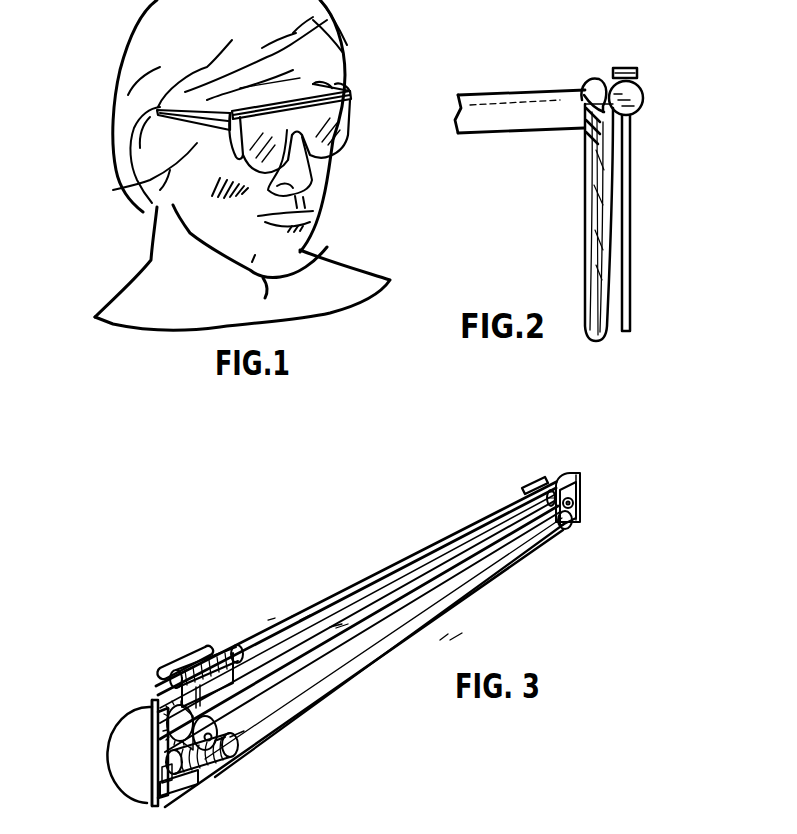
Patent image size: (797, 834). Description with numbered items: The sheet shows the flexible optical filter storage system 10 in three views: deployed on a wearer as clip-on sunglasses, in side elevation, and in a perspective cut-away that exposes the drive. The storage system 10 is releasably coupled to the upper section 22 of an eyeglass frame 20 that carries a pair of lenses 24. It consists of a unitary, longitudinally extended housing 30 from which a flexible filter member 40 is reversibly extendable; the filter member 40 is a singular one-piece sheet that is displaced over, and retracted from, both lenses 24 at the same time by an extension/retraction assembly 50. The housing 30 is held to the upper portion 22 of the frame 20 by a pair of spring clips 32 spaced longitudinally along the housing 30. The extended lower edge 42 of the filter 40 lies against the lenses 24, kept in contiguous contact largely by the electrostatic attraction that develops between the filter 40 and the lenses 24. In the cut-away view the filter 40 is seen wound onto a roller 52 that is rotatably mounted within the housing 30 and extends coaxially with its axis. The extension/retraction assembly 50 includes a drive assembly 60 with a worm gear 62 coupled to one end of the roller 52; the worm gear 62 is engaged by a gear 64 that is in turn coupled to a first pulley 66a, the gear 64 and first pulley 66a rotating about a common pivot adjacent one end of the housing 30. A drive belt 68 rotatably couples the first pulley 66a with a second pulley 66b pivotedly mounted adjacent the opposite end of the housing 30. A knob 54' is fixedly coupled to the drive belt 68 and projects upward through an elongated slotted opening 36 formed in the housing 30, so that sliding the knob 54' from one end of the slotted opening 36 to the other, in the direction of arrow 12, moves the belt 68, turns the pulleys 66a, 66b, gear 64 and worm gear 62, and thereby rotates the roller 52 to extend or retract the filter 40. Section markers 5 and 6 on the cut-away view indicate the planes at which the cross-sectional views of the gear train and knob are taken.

In FIG. 1, the flexible optical filter storage system 10 is at (364, 97).
In FIG. 2, the flexible optical filter storage system 10 is at (645, 151).
In FIG. 3, the direction arrow 12 is at (412, 818).
In FIG. 1, the eyeglass frame 20 is at (150, 180).
In FIG. 2, the upper section of eyeglass frame 22 is at (597, 80).
In FIG. 2, the lenses 24 is at (605, 322).
In FIG. 2, the housing 30 is at (640, 90).
In FIG. 3, the housing 30 is at (585, 478).
In FIG. 2, the spring clips 32 is at (582, 85).
In FIG. 3, the spring clips 32 is at (207, 650).
In FIG. 3, the slotted opening 36 is at (307, 617).
In FIG. 2, the flexible filter member 40 is at (628, 220).
In FIG. 2, the lower edge of flexible filter 42 is at (632, 330).
In FIG. 3, the extension/retraction assembly 50 is at (201, 783).
In FIG. 3, the roller 52 is at (217, 763).
In FIG. 3, the knob 54' is at (455, 711).
In FIG. 3, the drive assembly 60 is at (160, 735).
In FIG. 3, the worm gear 62 is at (222, 768).
In FIG. 3, the gear 64 is at (163, 770).
In FIG. 3, the first pulley 66a is at (153, 736).
In FIG. 3, the second pulley 66b is at (548, 478).
In FIG. 3, the drive belt 68 is at (397, 580).
In FIG. 3, the section line 5- 5 is at (118, 683).
In FIG. 3, the section line 6- 6 is at (172, 652).